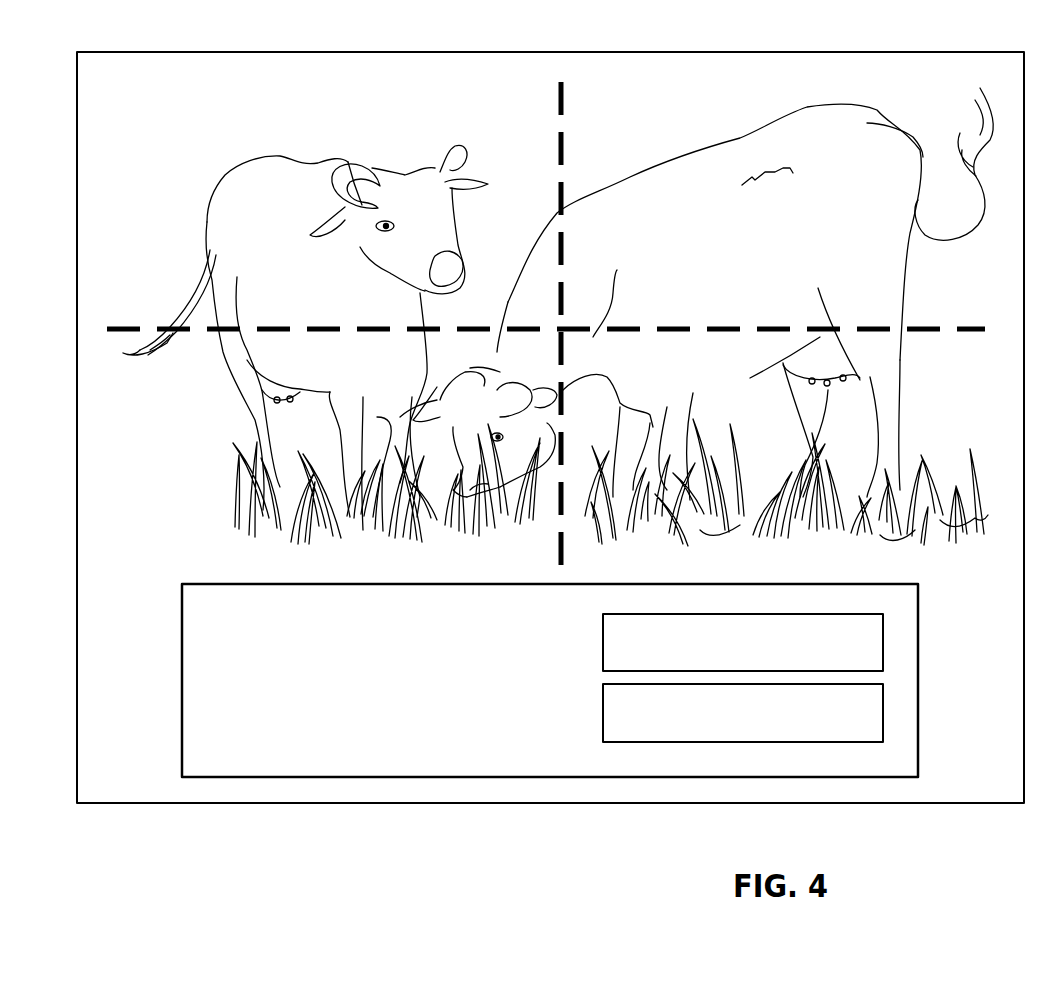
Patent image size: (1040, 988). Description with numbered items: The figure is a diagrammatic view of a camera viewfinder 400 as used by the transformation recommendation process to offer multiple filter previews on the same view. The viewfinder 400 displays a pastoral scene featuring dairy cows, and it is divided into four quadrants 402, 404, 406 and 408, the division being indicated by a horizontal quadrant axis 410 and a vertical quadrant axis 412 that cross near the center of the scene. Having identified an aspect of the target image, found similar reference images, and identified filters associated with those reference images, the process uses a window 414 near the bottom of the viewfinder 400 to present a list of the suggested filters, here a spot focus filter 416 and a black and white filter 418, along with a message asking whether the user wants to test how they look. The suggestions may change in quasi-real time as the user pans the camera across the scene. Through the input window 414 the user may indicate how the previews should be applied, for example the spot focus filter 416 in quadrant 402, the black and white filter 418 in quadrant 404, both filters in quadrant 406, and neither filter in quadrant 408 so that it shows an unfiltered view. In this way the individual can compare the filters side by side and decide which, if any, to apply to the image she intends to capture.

The viewfinder 400 is at (77, 87).
The quadrant 402 is at (175, 149).
The quadrant 404 is at (177, 465).
The quadrant 406 is at (928, 103).
The quadrant 408 is at (957, 398).
The quadrant axis 410 is at (140, 327).
The quadrant axis 412 is at (563, 103).
The window 414 is at (182, 637).
The spot focus filter 416 is at (885, 656).
The black and white filter 418 is at (885, 707).